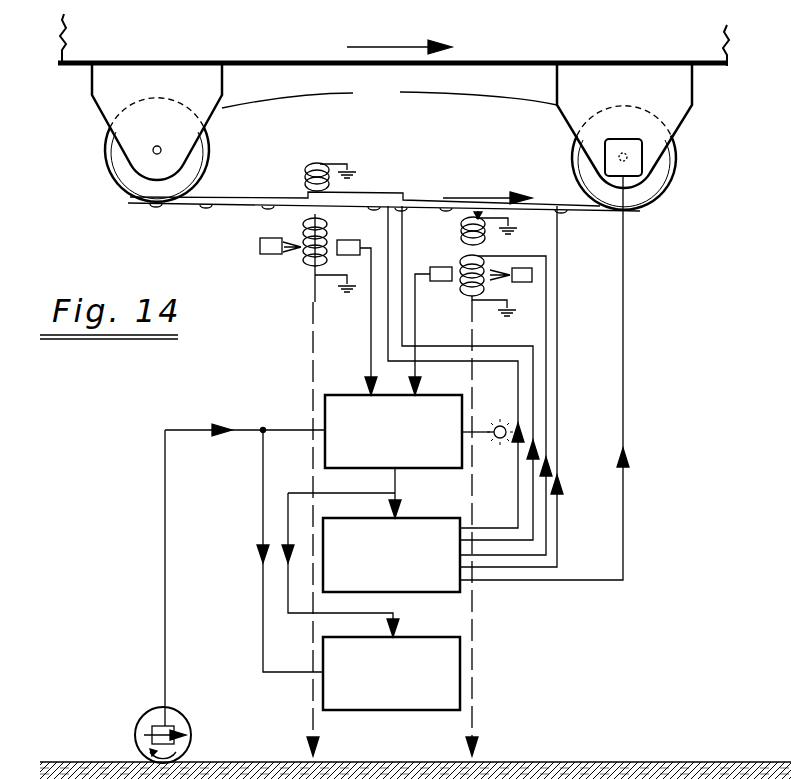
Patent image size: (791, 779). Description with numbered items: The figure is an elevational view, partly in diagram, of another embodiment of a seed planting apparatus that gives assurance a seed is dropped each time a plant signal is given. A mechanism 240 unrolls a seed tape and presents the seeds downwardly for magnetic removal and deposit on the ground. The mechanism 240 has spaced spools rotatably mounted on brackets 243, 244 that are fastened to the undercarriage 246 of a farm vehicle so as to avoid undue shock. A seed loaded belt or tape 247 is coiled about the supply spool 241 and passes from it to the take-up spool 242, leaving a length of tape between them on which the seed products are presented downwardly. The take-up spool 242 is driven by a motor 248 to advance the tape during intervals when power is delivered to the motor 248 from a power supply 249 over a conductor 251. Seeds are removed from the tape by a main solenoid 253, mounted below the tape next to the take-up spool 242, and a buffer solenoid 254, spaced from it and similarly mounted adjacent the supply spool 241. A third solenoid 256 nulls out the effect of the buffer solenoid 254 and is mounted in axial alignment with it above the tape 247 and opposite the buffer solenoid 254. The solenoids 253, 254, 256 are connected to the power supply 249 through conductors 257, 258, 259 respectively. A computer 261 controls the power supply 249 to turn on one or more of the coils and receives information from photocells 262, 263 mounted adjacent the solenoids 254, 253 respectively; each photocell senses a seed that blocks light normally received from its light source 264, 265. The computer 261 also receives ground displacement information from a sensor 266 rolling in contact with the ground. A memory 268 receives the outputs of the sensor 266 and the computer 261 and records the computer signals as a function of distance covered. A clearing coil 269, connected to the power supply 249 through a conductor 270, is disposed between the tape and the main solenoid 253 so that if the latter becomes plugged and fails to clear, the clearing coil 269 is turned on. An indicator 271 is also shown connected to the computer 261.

The mechanism 240 is at (389, 94).
The supply spool 241 is at (205, 156).
The take-up spool 242 is at (574, 158).
The bracket 243 is at (641, 93).
The bracket 244 is at (176, 93).
The undercarriage 246 is at (553, 58).
The seed loaded belt or tape 247 is at (228, 203).
The motor 248 is at (642, 160).
The power supply 249 is at (440, 593).
The conductor 251 is at (625, 322).
The main solenoid 253 is at (464, 292).
The buffer solenoid 254 is at (303, 232).
The third solenoid 256 is at (308, 170).
The conductor 257 is at (520, 526).
The conductor 258 is at (520, 436).
The conductor 259 is at (548, 382).
The computer 261 is at (432, 470).
The photocell 262 is at (352, 241).
The photocell 263 is at (441, 267).
The light source 264 is at (275, 257).
The light source 265 is at (520, 283).
The sensor 266 is at (142, 712).
The memory 268 is at (438, 712).
The clearing coil 269 is at (461, 231).
The conductor 270 is at (559, 322).
The indicator lamp 271 is at (500, 426).